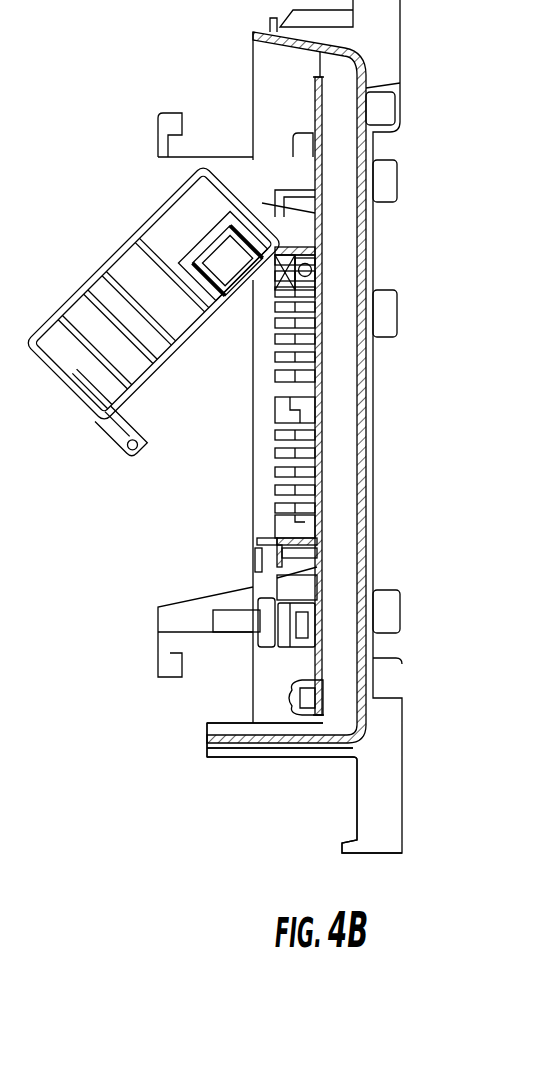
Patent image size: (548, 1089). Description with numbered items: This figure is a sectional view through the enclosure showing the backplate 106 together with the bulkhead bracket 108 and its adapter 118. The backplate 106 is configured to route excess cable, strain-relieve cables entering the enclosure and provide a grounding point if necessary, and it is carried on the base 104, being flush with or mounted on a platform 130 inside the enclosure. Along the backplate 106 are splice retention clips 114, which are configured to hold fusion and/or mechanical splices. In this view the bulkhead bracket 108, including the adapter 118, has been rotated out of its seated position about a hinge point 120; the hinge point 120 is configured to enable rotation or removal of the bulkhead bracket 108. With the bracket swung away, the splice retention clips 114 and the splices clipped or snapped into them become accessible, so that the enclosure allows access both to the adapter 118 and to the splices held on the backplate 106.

The base 104 is at (363, 733).
The backplate 106 is at (323, 520).
The bulkhead bracket 108 is at (58, 305).
The splice retention clips 114 is at (303, 470).
The adapter 118 is at (222, 263).
The hinge point 120 is at (316, 263).
The platform 130 is at (337, 563).